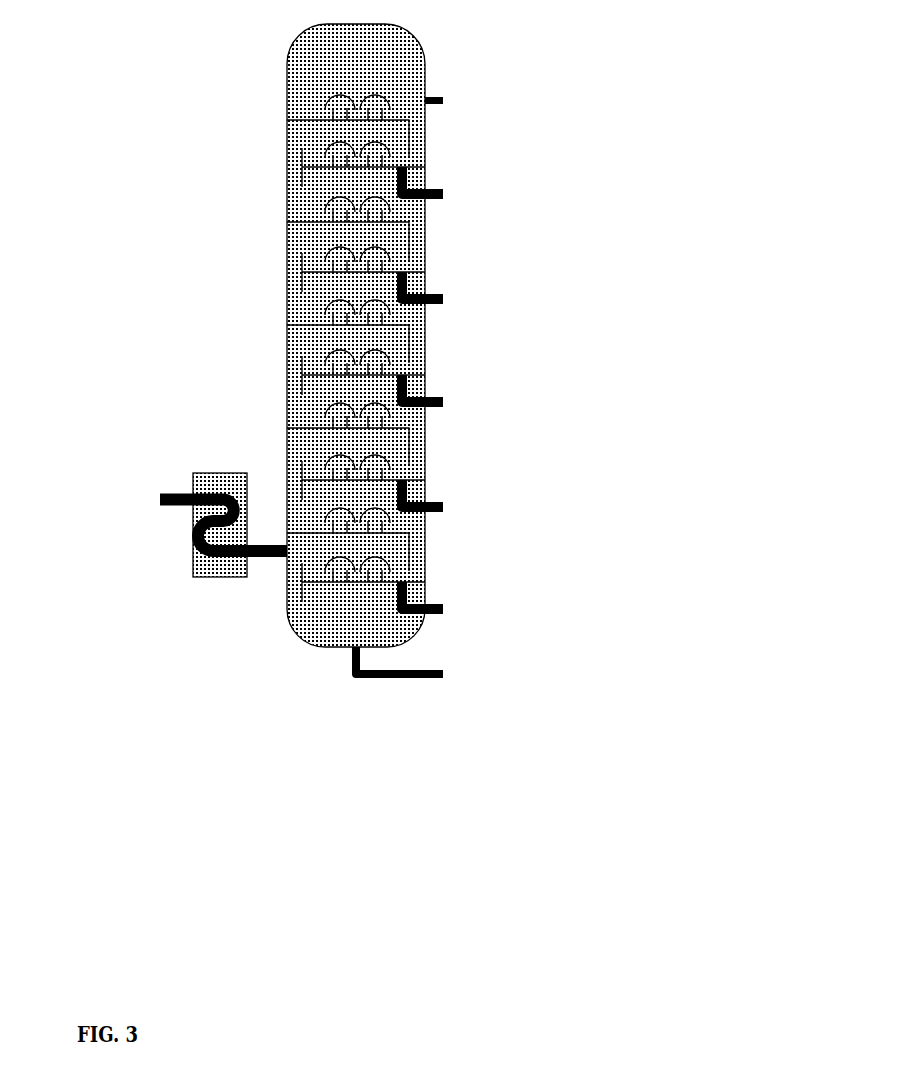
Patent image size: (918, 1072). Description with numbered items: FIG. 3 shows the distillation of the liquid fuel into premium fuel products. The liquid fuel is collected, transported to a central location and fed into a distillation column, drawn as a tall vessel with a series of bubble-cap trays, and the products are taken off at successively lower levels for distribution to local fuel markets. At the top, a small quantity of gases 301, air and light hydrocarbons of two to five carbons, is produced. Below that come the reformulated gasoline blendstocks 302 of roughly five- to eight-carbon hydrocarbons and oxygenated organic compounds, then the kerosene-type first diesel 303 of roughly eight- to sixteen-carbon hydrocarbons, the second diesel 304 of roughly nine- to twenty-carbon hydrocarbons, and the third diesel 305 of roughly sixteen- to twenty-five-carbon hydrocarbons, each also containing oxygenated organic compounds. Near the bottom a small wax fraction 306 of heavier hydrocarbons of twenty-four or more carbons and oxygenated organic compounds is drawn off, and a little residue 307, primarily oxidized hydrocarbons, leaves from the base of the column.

The gases 301 is at (125, 502).
The reformulated gasoline blendstocks 302 is at (592, 192).
The diesel #1 (kerosene) 303 is at (583, 297).
The diesel #2 304 is at (566, 397).
The diesel #3 305 is at (570, 502).
The wax fraction 306 is at (531, 603).
The residue 307 is at (494, 666).